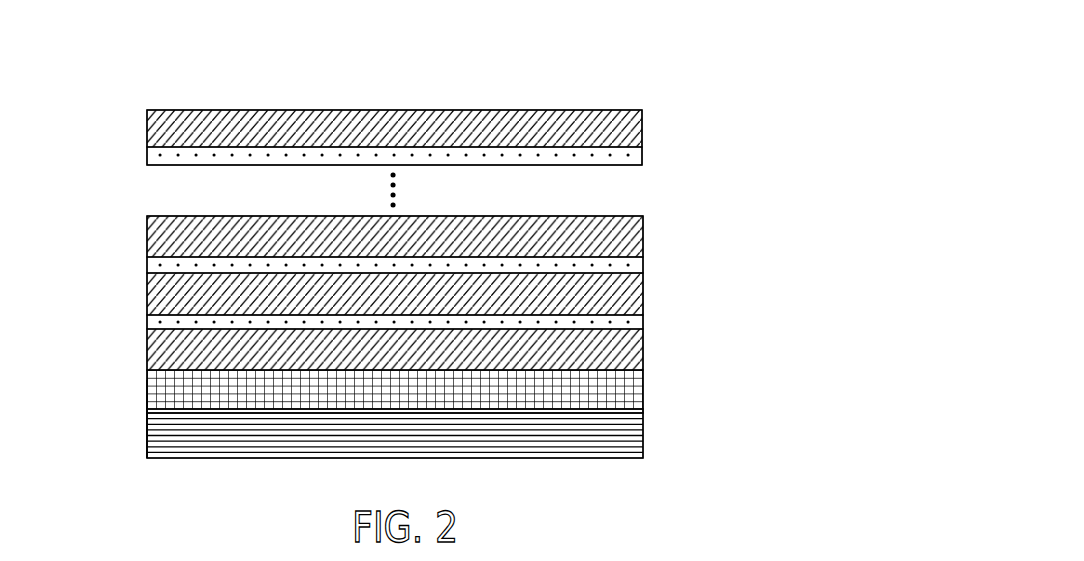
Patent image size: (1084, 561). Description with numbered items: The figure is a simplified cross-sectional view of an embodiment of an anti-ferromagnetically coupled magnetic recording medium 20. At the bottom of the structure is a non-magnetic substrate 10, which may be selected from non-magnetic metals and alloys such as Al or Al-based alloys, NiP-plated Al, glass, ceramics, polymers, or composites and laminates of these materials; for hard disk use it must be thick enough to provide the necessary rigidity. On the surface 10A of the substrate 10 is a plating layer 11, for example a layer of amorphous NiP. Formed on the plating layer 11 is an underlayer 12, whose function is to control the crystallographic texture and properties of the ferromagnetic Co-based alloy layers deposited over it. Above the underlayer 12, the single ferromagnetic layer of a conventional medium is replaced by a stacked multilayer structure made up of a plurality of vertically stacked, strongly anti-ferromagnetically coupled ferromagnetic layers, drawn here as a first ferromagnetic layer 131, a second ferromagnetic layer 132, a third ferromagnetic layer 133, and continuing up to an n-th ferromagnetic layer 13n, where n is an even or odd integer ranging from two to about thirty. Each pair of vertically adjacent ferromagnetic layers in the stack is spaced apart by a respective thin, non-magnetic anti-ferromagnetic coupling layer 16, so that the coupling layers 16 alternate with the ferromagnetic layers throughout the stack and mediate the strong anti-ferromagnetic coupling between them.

The magnetic recording medium 20 is at (137, 86).
The non-magnetic substrate 10 is at (648, 438).
The surface 10A is at (147, 412).
The plating layer 11 is at (648, 407).
The underlayer 12 is at (648, 384).
The first ferromagnetic layer 131 is at (648, 344).
The second ferromagnetic layer 132 is at (648, 287).
The third ferromagnetic layer 133 is at (648, 229).
The n-th ferromagnetic layer 13n is at (648, 123).
The anti-ferromagnetic coupling layer 16 is at (648, 153).